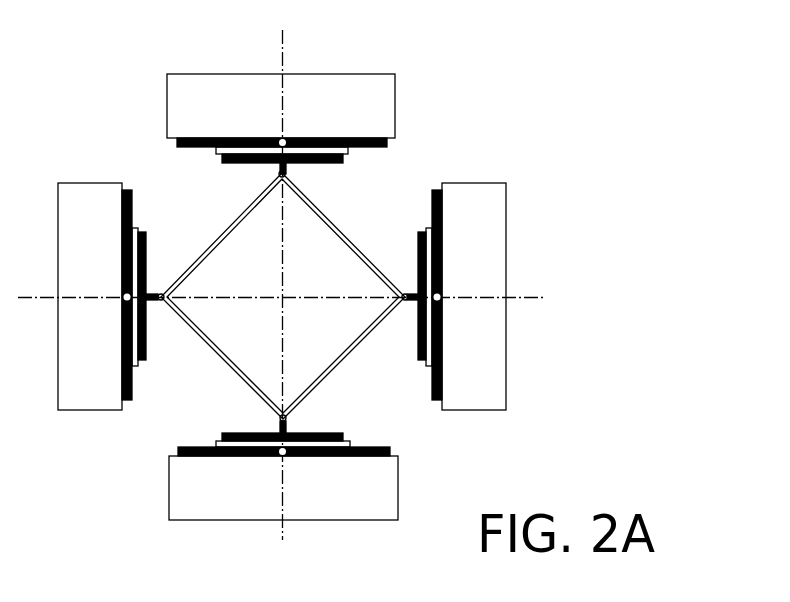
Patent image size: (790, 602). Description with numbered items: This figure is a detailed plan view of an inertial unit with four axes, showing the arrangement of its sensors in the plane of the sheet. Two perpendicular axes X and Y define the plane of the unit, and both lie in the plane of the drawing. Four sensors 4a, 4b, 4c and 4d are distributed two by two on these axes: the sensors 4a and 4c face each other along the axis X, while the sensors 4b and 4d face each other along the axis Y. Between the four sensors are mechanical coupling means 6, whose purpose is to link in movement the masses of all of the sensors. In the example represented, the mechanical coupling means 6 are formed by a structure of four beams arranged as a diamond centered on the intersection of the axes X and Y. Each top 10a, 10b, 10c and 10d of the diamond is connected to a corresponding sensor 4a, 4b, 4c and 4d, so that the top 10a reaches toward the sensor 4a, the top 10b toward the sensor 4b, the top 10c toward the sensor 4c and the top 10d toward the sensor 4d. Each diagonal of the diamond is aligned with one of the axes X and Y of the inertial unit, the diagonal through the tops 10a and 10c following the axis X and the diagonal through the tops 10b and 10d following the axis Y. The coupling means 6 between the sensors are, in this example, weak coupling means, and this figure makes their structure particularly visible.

The sensor 4a is at (61, 178).
The sensor 4b is at (406, 74).
The sensor 4c is at (501, 418).
The sensor 4d is at (160, 516).
The mechanical coupling means 6 is at (141, 431).
The top of the diamond 10a is at (162, 294).
The top of the diamond 10b is at (286, 175).
The top of the diamond 10c is at (405, 301).
The top of the diamond 10d is at (280, 420).
The axis X is at (530, 300).
The axis Y is at (284, 45).